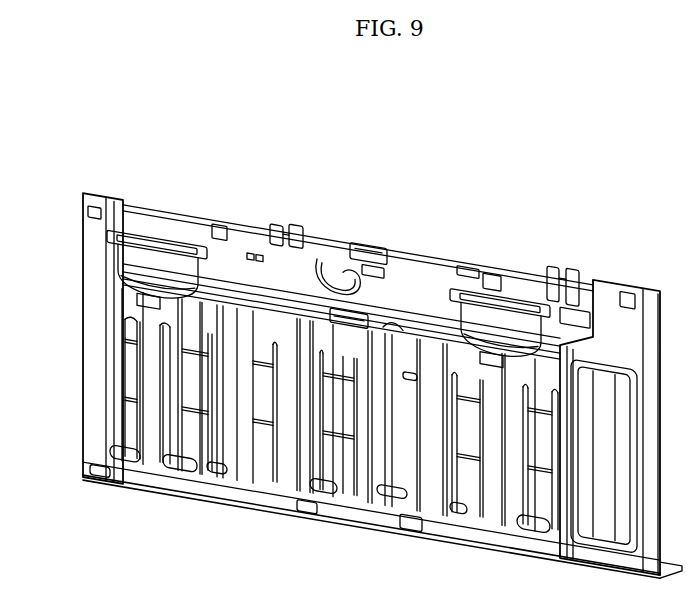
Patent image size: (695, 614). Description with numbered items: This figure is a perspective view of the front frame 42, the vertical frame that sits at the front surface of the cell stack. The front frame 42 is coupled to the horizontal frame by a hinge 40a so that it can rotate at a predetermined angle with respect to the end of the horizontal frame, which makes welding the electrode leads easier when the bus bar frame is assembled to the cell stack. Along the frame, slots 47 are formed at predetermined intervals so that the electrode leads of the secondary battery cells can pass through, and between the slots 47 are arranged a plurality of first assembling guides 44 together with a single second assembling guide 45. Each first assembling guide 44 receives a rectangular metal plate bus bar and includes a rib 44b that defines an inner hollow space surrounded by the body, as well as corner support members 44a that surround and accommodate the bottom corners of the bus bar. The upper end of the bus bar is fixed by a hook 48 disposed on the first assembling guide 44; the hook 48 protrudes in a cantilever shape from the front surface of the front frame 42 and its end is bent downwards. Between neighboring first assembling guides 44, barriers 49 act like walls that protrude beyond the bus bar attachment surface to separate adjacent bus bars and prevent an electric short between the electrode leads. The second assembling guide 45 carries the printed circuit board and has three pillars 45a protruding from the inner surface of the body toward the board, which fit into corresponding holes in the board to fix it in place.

The front frame 42 is at (218, 103).
The hinge 40a is at (291, 222).
The first assembling guide 44 is at (336, 316).
The corner support member 44a is at (327, 521).
The rib 44b is at (368, 523).
The second assembling guide 45 is at (418, 330).
The pillar 45a is at (413, 527).
The slot 47 is at (307, 521).
The hook 48 is at (382, 243).
The barrier 49 is at (283, 517).